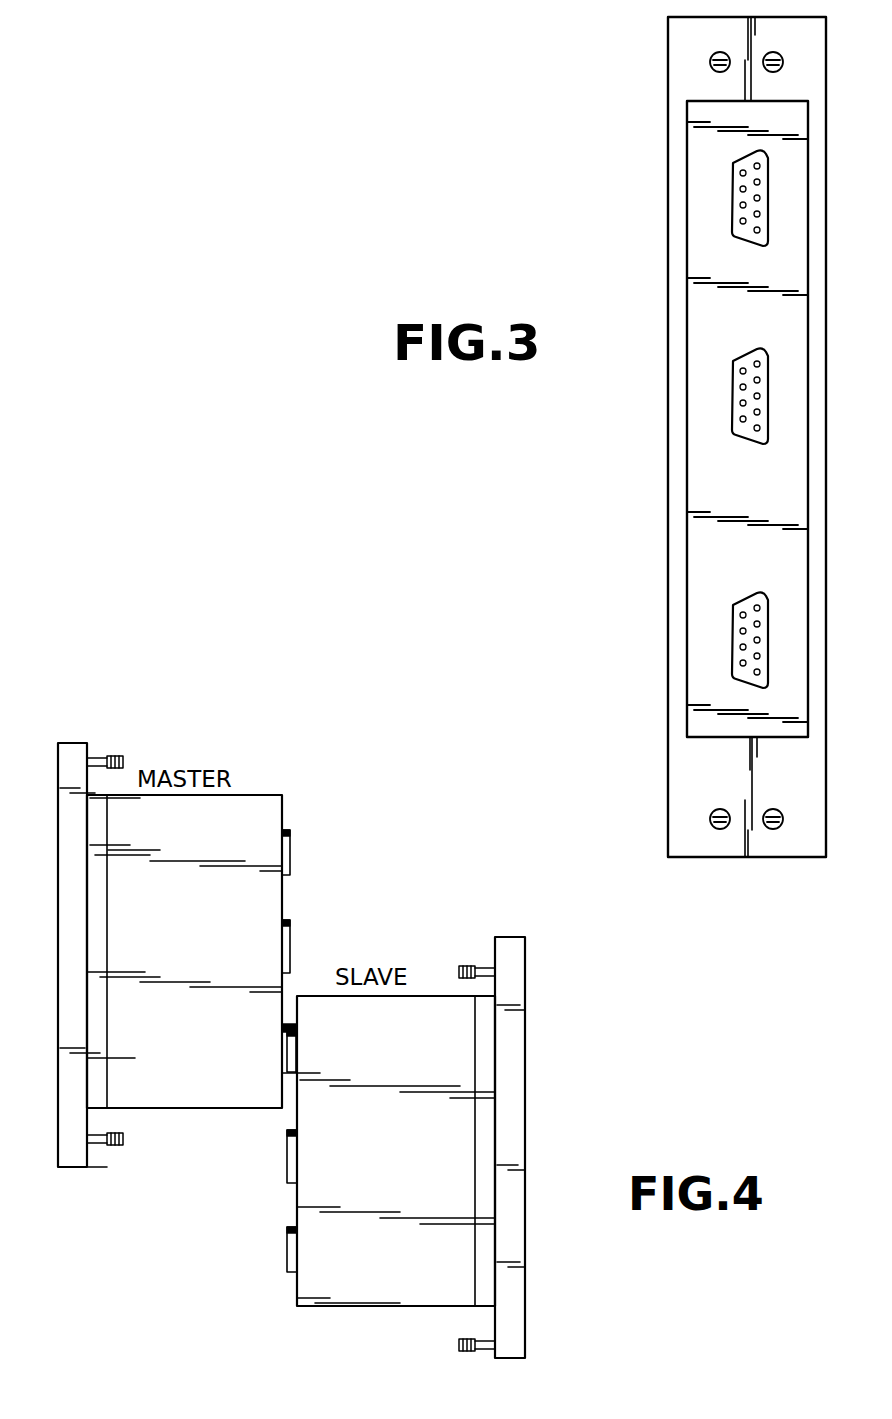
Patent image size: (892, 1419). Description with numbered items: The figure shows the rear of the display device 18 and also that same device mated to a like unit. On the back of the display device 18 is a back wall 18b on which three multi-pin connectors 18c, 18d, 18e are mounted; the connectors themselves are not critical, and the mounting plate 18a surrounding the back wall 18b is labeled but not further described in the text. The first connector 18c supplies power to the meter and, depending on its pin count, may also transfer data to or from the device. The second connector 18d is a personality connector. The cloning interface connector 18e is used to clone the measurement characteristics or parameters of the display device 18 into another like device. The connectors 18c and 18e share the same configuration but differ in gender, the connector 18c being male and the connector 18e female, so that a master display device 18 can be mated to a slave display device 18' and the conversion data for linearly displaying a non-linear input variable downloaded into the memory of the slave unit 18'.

In FIG. 3, the display device 18 is at (555, 533).
In FIG. 4, the display device 18 is at (170, 896).
In FIG. 4, the slave display device 18' is at (491, 1147).
In FIG. 3, the mounting plate 18a is at (680, 45).
In FIG. 3, the back wall 18b is at (706, 145).
In FIG. 3, the first connector 18c is at (732, 206).
In FIG. 4, the first connector 18c is at (290, 852).
In FIG. 3, the personality connector 18d is at (735, 410).
In FIG. 4, the personality connector 18d is at (290, 945).
In FIG. 3, the cloning interface connector 18e is at (732, 636).
In FIG. 4, the cloning interface connector 18e is at (282, 1058).